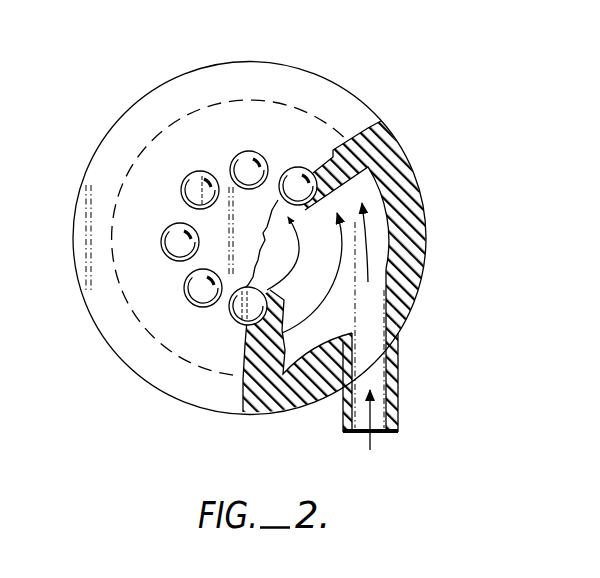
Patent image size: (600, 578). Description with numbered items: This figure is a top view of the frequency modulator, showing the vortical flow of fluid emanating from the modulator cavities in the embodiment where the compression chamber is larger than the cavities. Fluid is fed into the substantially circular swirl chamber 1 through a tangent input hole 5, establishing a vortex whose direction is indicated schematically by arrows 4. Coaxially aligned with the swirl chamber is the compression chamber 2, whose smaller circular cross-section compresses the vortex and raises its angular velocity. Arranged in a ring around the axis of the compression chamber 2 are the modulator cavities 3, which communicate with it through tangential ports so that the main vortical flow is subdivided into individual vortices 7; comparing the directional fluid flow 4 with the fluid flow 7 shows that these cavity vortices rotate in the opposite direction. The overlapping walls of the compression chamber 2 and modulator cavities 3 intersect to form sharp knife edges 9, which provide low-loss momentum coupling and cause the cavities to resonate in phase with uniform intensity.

The swirl chamber 1 is at (380, 216).
The compression chamber 2 is at (287, 253).
The modulator cavities 3 is at (244, 153).
The arrows 4 is at (372, 446).
The tangent input hole 5 is at (396, 416).
The individual vortices 7 is at (293, 167).
The knife edges 9 is at (181, 228).